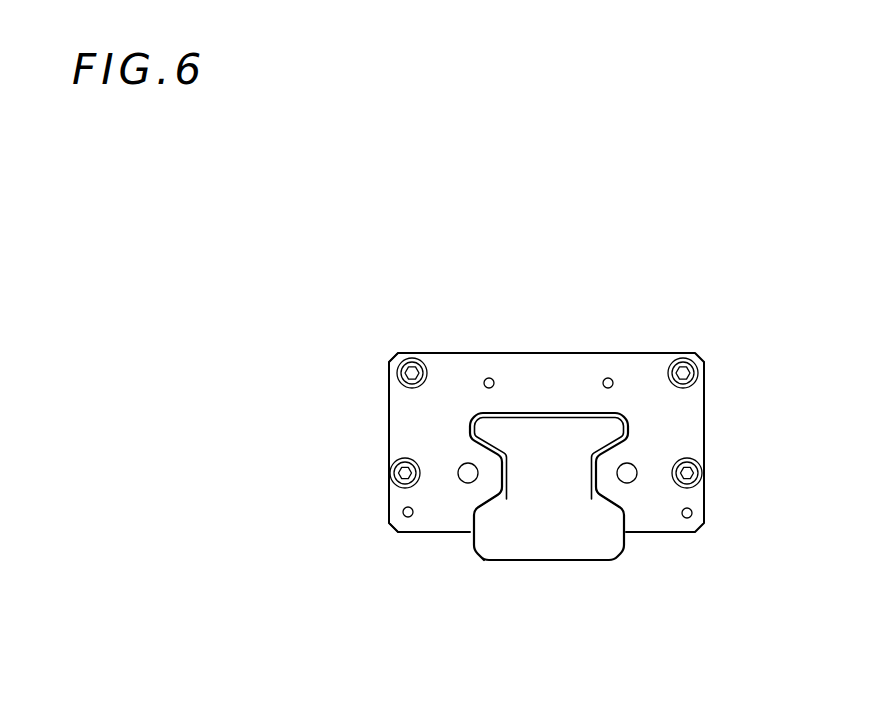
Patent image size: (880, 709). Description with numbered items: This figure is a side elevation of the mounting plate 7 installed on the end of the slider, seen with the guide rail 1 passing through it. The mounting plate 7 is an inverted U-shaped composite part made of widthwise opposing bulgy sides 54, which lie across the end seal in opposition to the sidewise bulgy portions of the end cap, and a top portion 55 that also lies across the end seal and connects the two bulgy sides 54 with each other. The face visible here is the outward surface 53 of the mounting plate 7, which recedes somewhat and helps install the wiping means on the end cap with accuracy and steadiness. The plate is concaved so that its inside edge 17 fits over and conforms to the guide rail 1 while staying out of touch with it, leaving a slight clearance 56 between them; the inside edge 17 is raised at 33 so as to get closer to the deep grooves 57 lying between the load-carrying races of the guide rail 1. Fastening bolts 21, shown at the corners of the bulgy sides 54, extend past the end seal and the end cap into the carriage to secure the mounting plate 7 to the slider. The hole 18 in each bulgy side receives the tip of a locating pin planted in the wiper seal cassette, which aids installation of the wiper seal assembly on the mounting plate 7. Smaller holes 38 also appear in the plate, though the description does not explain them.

The guide rail 1 is at (563, 532).
The mounting plate 7 is at (638, 352).
The inside edge 17 is at (471, 424).
The hole 18 is at (467, 475).
The fastening bolts 21 is at (412, 356).
The raised portion of inside edge 33 is at (506, 500).
The positioning hole 38 is at (489, 377).
The outward surface of mounting plate 53 is at (407, 420).
The widthwise opposing bulgy sides 54 is at (427, 491).
The top portion 55 is at (543, 373).
The clearance 56 is at (590, 496).
The deep grooves 57 is at (600, 450).